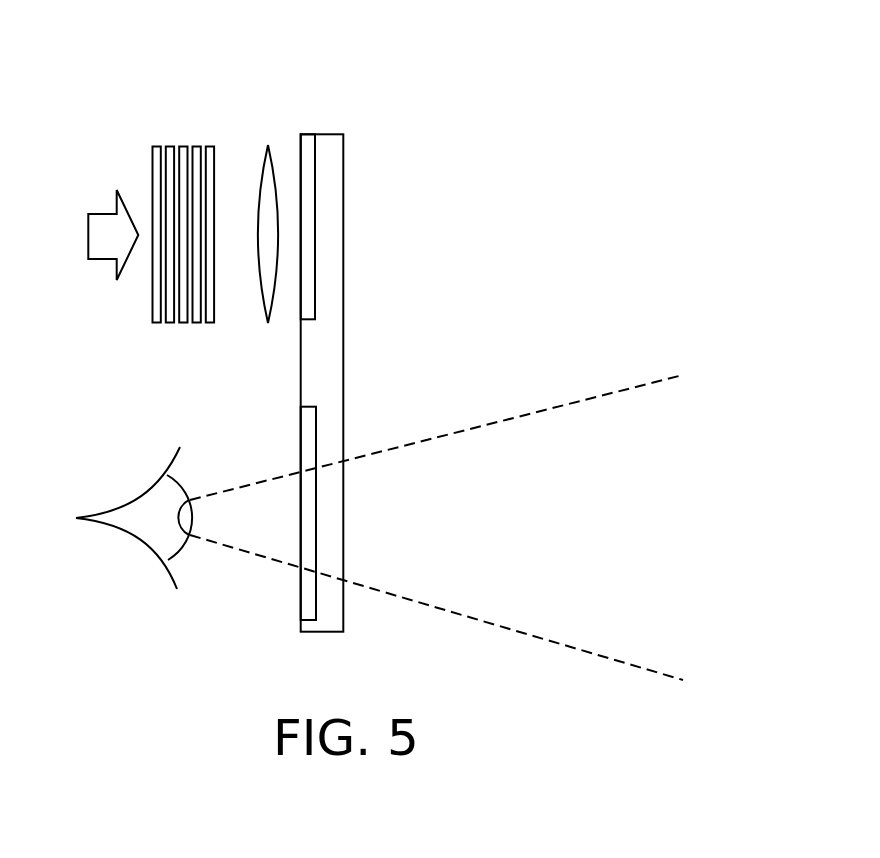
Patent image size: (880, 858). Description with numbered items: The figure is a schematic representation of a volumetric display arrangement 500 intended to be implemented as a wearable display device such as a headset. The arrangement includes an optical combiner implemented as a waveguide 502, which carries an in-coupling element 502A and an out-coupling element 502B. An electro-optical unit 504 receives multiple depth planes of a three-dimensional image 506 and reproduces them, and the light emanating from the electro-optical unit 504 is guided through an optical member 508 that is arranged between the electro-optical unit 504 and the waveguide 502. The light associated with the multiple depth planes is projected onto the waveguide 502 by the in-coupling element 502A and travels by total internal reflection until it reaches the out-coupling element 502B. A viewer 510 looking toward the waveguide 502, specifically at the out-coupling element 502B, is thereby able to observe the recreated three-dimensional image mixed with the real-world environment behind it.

The volumetric display arrangement 500 is at (682, 62).
The waveguide 502 is at (343, 325).
The in-coupling element 502A is at (315, 243).
The out-coupling element 502B is at (316, 563).
The electro-optical unit 504 is at (183, 132).
The three-dimensional image 506 is at (83, 235).
The optical member 508 is at (268, 150).
The viewer 510 is at (103, 448).